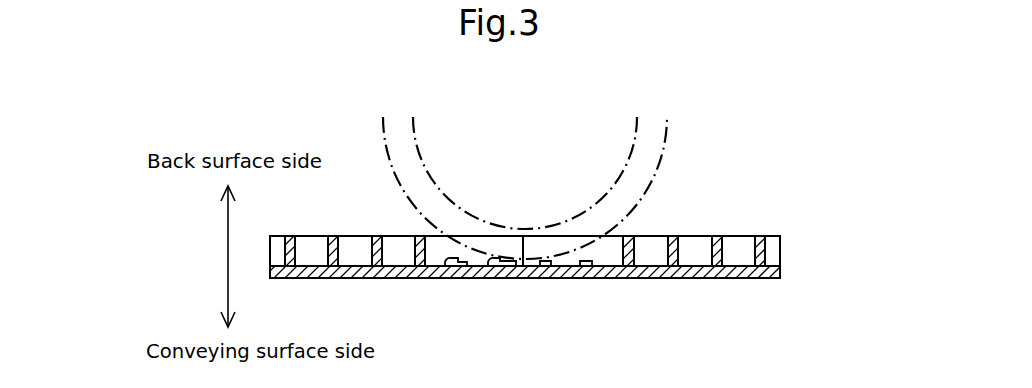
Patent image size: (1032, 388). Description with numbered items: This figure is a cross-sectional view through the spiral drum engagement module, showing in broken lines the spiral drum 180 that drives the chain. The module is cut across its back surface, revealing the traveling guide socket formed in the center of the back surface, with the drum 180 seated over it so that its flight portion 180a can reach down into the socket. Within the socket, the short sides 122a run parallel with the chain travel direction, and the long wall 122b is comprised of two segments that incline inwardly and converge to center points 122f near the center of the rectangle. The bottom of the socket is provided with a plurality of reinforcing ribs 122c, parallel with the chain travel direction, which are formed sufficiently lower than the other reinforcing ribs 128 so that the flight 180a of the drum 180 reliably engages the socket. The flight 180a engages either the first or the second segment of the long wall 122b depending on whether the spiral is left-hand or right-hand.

The spiral drum 180 is at (637, 125).
The flight portion of the spiral drum 180a is at (667, 150).
The reinforcing ribs 128 is at (701, 238).
The reinforcing ribs 122c is at (487, 261).
The center points 122f is at (521, 252).
The long wall 122b is at (575, 258).
The short sides 122a is at (620, 262).